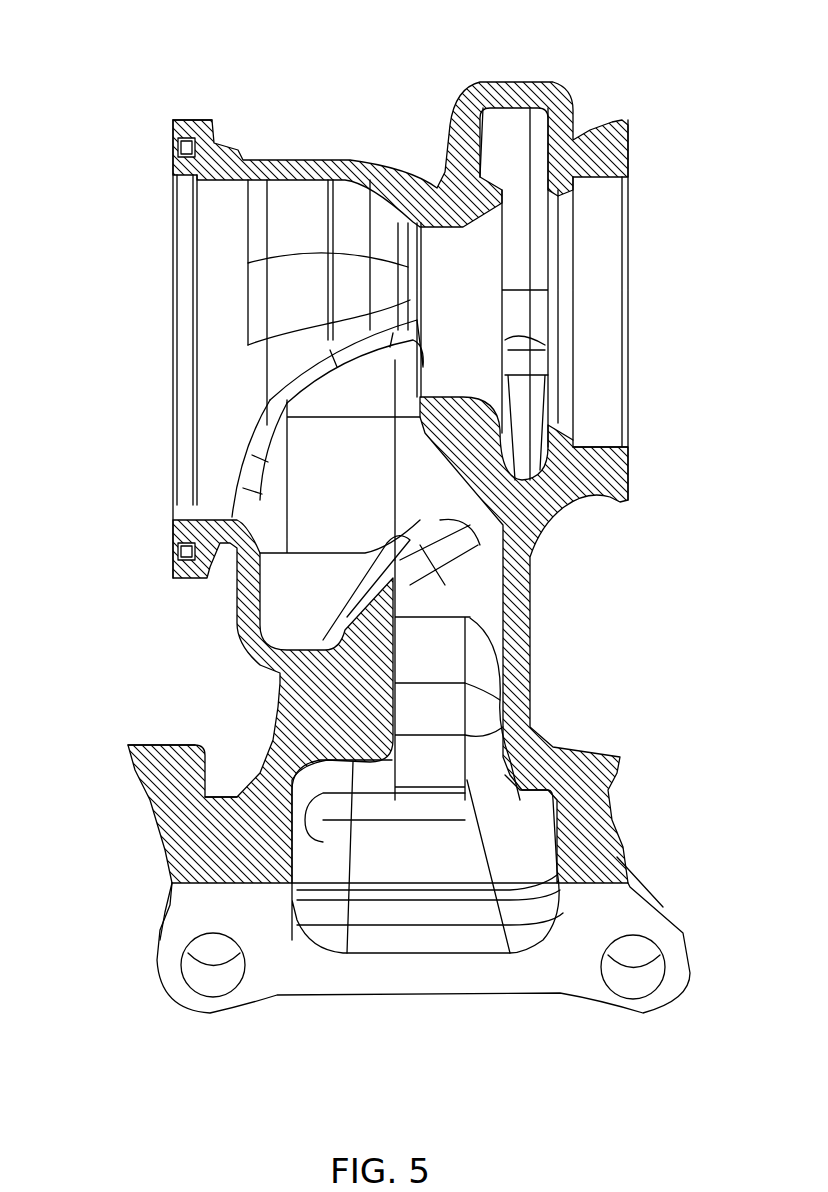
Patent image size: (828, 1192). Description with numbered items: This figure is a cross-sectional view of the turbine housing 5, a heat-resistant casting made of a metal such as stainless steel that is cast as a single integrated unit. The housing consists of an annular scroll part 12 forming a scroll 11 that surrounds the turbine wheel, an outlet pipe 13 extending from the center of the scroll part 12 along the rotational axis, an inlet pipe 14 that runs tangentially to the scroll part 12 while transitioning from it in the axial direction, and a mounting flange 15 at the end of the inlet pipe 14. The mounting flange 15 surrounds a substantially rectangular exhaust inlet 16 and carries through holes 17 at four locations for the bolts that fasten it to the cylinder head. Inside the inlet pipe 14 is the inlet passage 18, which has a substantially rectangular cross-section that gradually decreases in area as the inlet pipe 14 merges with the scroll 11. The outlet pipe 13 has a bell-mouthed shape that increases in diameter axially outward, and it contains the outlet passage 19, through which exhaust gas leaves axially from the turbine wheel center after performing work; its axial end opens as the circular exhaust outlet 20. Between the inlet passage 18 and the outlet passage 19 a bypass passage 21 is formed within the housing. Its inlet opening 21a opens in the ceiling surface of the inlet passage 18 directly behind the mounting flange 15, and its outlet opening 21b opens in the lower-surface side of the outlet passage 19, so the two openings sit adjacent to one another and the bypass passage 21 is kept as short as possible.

The turbine housing 5 is at (210, 634).
The scroll 11 is at (515, 128).
The scroll part 12 is at (480, 87).
The outlet pipe 13 is at (283, 163).
The inlet pipe 14 is at (283, 743).
The mounting flange 15 is at (440, 980).
The exhaust inlet 16 is at (380, 940).
The through holes 17 is at (213, 977).
The inlet passage 18 is at (507, 860).
The outlet passage 19 is at (300, 210).
The exhaust outlet 20 is at (186, 297).
The bypass passage 21 is at (487, 700).
The inlet opening 21a is at (480, 757).
The outlet opening 21b is at (447, 585).